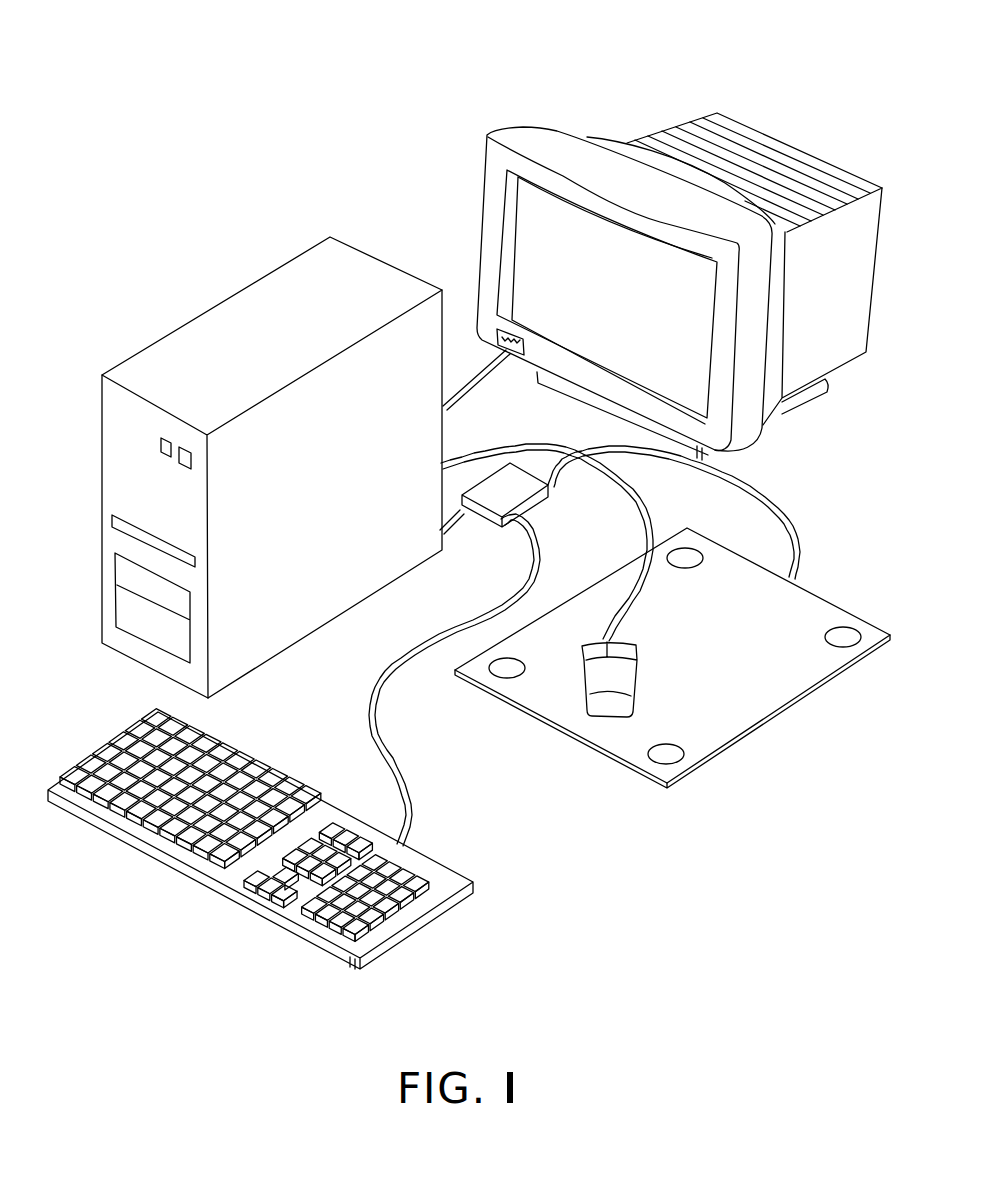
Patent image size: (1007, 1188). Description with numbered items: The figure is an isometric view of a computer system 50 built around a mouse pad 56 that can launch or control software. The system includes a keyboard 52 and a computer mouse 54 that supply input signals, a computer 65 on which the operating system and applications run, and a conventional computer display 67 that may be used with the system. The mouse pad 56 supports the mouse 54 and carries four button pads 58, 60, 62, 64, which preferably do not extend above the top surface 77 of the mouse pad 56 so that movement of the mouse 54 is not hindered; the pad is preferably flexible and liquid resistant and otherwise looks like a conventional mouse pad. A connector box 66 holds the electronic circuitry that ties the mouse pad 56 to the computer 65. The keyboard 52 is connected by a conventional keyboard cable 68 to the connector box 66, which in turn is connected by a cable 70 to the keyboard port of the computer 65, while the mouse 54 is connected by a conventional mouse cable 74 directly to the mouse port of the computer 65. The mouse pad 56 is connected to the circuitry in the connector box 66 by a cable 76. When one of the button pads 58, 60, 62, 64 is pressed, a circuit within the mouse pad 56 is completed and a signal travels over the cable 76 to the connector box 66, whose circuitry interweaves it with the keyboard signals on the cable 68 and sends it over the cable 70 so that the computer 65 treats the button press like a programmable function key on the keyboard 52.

The computer system 50 is at (168, 163).
The keyboard 52 is at (465, 878).
The computer mouse 54 is at (583, 693).
The mouse pad 56 is at (672, 666).
The button pad 58 is at (684, 758).
The button pad 60 is at (845, 648).
The button pad 62 is at (698, 552).
The button pad 64 is at (489, 674).
The computer 65 is at (254, 283).
The connector box 66 is at (553, 490).
The computer display 67 is at (683, 124).
The keyboard cable 68 is at (410, 780).
The cable 70 is at (461, 538).
The mouse cable 74 is at (648, 489).
The cable 76 is at (760, 494).
The top surface 77 is at (835, 604).